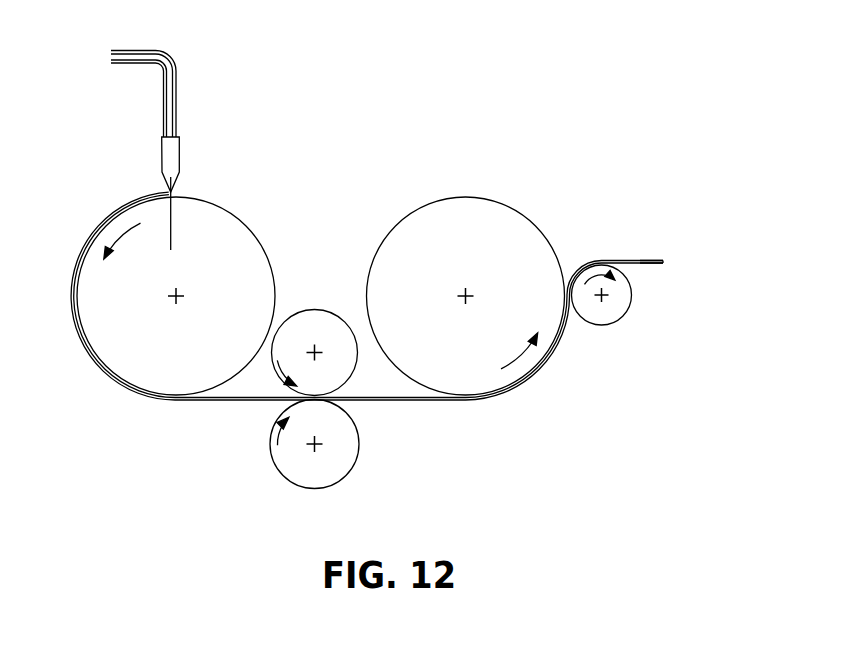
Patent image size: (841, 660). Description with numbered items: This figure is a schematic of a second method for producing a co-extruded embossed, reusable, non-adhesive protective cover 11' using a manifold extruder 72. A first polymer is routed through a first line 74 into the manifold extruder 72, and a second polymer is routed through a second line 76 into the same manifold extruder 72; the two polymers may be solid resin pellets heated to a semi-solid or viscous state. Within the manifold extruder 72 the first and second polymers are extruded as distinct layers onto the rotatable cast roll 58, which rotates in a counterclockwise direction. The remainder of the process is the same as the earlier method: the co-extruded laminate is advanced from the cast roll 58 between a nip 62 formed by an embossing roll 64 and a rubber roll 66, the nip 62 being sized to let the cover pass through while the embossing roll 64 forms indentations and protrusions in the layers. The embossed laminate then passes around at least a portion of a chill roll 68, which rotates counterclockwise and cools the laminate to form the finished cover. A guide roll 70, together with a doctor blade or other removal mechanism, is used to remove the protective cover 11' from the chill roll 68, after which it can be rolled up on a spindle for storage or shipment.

The cast roll 58 is at (228, 247).
The nip 62 is at (357, 395).
The embossing roll 64 is at (309, 325).
The rubber roll 66 is at (333, 462).
The chill roll 68 is at (515, 208).
The guide roll 70 is at (628, 312).
The manifold extruder 72 is at (168, 154).
The first line 74 is at (150, 50).
The second line 76 is at (140, 63).
The co-extruded embossed, reusable, non-adhesive protective cover 11' is at (680, 234).